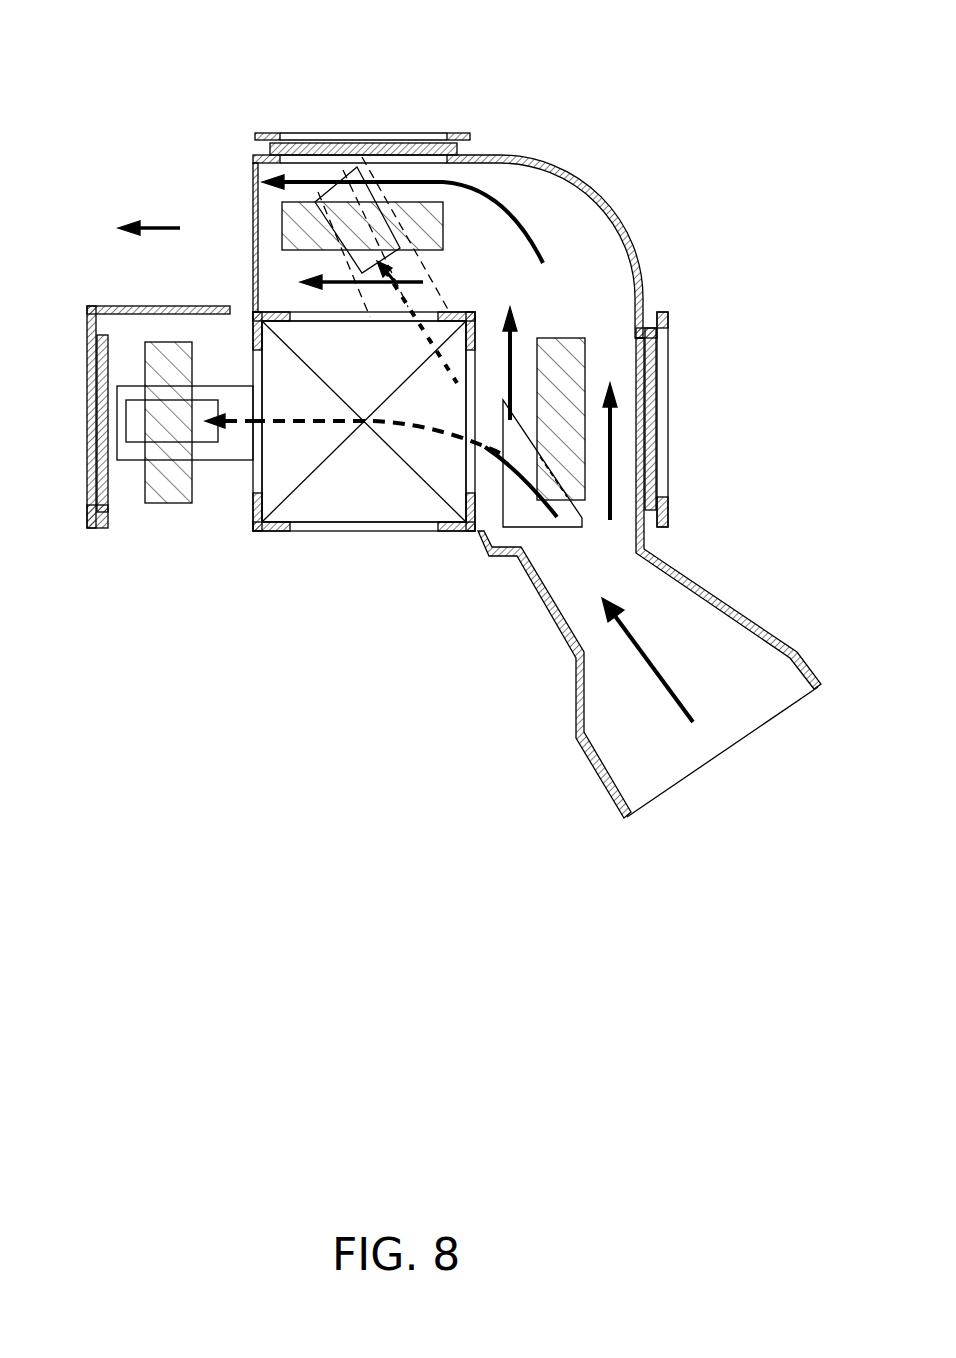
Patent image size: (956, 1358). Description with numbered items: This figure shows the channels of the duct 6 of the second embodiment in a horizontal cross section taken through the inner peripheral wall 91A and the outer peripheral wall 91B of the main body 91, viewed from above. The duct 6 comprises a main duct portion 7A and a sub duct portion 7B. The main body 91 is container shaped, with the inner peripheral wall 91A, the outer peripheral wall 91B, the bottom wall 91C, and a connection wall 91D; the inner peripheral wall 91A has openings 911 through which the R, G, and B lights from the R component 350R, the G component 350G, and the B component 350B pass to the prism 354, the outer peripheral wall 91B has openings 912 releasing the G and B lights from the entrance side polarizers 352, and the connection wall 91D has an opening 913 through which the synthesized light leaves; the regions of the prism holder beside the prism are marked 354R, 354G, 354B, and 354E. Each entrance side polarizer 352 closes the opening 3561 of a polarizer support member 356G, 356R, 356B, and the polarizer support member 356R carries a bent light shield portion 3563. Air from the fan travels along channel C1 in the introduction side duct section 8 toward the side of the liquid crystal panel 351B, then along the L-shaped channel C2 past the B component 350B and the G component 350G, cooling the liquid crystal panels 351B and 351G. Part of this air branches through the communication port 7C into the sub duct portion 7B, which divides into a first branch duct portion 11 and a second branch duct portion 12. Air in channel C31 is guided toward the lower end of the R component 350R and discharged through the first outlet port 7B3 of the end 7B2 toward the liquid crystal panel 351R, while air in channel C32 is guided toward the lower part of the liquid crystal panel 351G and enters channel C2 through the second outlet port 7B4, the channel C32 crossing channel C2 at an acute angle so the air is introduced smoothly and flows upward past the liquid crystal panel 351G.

The duct 6 is at (256, 397).
The main duct portion 7A is at (331, 502).
The sub duct portion 7B is at (256, 376).
The end of the sub duct portion 7B2 is at (132, 385).
The first outlet port 7B3 is at (132, 407).
The second outlet port 7B4 is at (347, 192).
The communication port 7C is at (535, 530).
The introduction side duct section 8 is at (757, 630).
The first branch duct portion 11 is at (233, 393).
The second branch duct portion 12 is at (440, 293).
The main body 91 is at (508, 450).
The inner peripheral wall 91A is at (253, 300).
The outer peripheral wall 91B is at (535, 157).
The bottom wall 91C is at (613, 248).
The connection wall 91D is at (452, 533).
The opening 911 is at (307, 318).
The opening 912 is at (450, 167).
The opening 913 is at (427, 520).
The G component 350G is at (395, 307).
The R component 350R is at (111, 498).
The B component 350B is at (694, 419).
The liquid crystal panel 351G is at (423, 213).
The liquid crystal panel 351R is at (165, 503).
The liquid crystal panel 351B is at (567, 465).
The entrance side polarizer 352 is at (373, 143).
The prism 354 is at (352, 448).
The red side opening 354R is at (257, 377).
The green side opening 354G is at (347, 311).
The blue side opening 354B is at (480, 553).
The bottom plate 354E is at (378, 533).
The polarizer support member 356G is at (383, 307).
The polarizer support member 356R is at (130, 448).
The polarizer support member 356B is at (694, 382).
The opening 3561 is at (287, 135).
The light shield portion 3563 is at (107, 305).
The channel C1 is at (652, 653).
The channel C2 is at (520, 215).
The channel C31 is at (325, 425).
The channel C32 is at (422, 328).